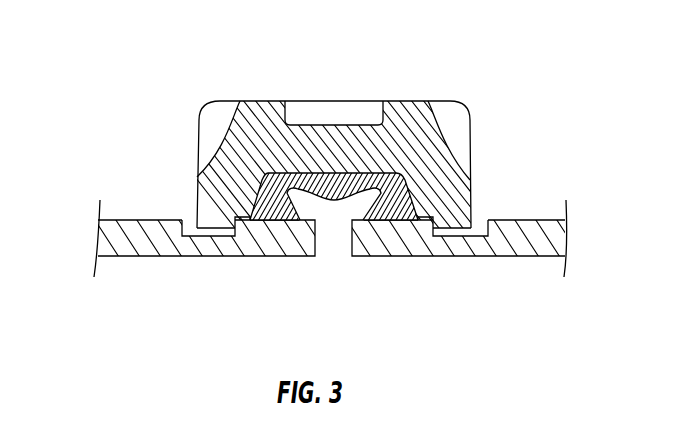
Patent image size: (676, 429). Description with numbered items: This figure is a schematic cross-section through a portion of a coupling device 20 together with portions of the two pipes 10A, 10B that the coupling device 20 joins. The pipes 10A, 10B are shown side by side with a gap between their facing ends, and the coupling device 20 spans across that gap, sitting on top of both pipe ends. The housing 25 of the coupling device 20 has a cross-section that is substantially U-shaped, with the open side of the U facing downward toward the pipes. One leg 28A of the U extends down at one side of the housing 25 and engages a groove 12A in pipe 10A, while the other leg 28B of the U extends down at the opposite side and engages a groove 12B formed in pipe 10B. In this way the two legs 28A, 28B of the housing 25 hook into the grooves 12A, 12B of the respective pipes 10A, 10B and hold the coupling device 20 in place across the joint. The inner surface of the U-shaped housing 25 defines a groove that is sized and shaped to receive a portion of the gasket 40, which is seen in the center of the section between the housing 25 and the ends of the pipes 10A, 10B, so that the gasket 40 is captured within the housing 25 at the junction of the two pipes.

The coupling device 20 is at (178, 66).
The housing 25 is at (307, 101).
The leg 28A is at (212, 192).
The leg 28B is at (460, 198).
The pipe 10A is at (137, 243).
The pipe 10B is at (535, 250).
The groove 12A is at (207, 237).
The groove 12B is at (465, 237).
The gasket 40 is at (272, 200).